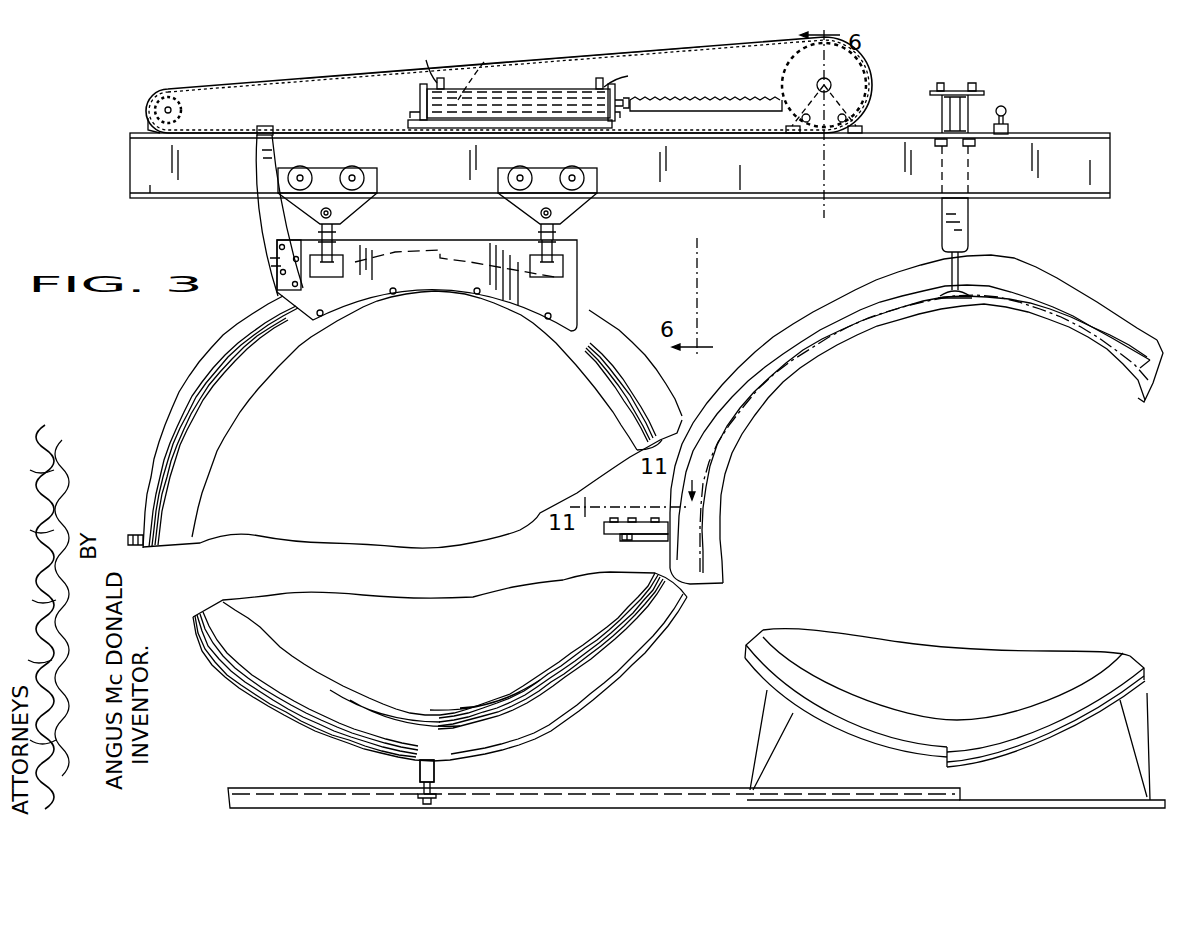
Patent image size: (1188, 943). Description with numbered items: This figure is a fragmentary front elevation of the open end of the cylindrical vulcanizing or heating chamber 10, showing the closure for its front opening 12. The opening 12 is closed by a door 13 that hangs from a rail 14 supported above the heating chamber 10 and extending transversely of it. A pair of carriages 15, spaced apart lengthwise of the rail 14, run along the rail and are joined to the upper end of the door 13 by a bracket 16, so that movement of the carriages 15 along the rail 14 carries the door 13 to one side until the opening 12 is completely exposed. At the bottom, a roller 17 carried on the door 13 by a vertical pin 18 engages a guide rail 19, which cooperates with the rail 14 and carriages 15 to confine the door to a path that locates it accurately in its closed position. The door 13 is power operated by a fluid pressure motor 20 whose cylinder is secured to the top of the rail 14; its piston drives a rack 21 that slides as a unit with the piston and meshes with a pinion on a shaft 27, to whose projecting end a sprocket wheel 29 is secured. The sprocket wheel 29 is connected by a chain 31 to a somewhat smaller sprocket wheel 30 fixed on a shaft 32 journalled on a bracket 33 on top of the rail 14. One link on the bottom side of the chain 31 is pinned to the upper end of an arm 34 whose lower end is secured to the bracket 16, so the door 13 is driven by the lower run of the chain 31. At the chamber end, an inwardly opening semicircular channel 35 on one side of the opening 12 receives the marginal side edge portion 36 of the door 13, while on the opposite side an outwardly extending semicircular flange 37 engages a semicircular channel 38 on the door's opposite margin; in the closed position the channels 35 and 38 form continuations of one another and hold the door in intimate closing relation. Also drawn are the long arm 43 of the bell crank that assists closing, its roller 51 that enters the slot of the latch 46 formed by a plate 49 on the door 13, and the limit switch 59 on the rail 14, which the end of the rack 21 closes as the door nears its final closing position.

The heating chamber 10 is at (869, 273).
The opening 12 is at (830, 343).
The door 13 is at (233, 450).
The rail 14 is at (1072, 150).
The carriages 15 is at (370, 181).
The bracket 16 is at (572, 262).
The roller 17 is at (440, 791).
The vertical pin 18 is at (420, 784).
The guide rail 19 is at (606, 797).
The fluid pressure motor 20 is at (535, 88).
The rack 21 is at (704, 104).
The shaft 27 is at (821, 84).
The sprocket wheel 29 is at (858, 78).
The sprocket wheel 30 is at (180, 98).
The chain 31 is at (290, 73).
The shaft 32 is at (185, 112).
The bracket 33 is at (146, 130).
The arm 34 is at (270, 142).
The semicircular channel 35 is at (1066, 292).
The marginal side edge portion 36 is at (622, 336).
The semicircular flange 37 is at (748, 350).
The semicircular channel 38 is at (232, 338).
The arm 43 is at (617, 522).
The latch 46 is at (660, 541).
The plate 49 is at (140, 538).
The roller 51 is at (624, 540).
The limit switch 59 is at (1003, 107).